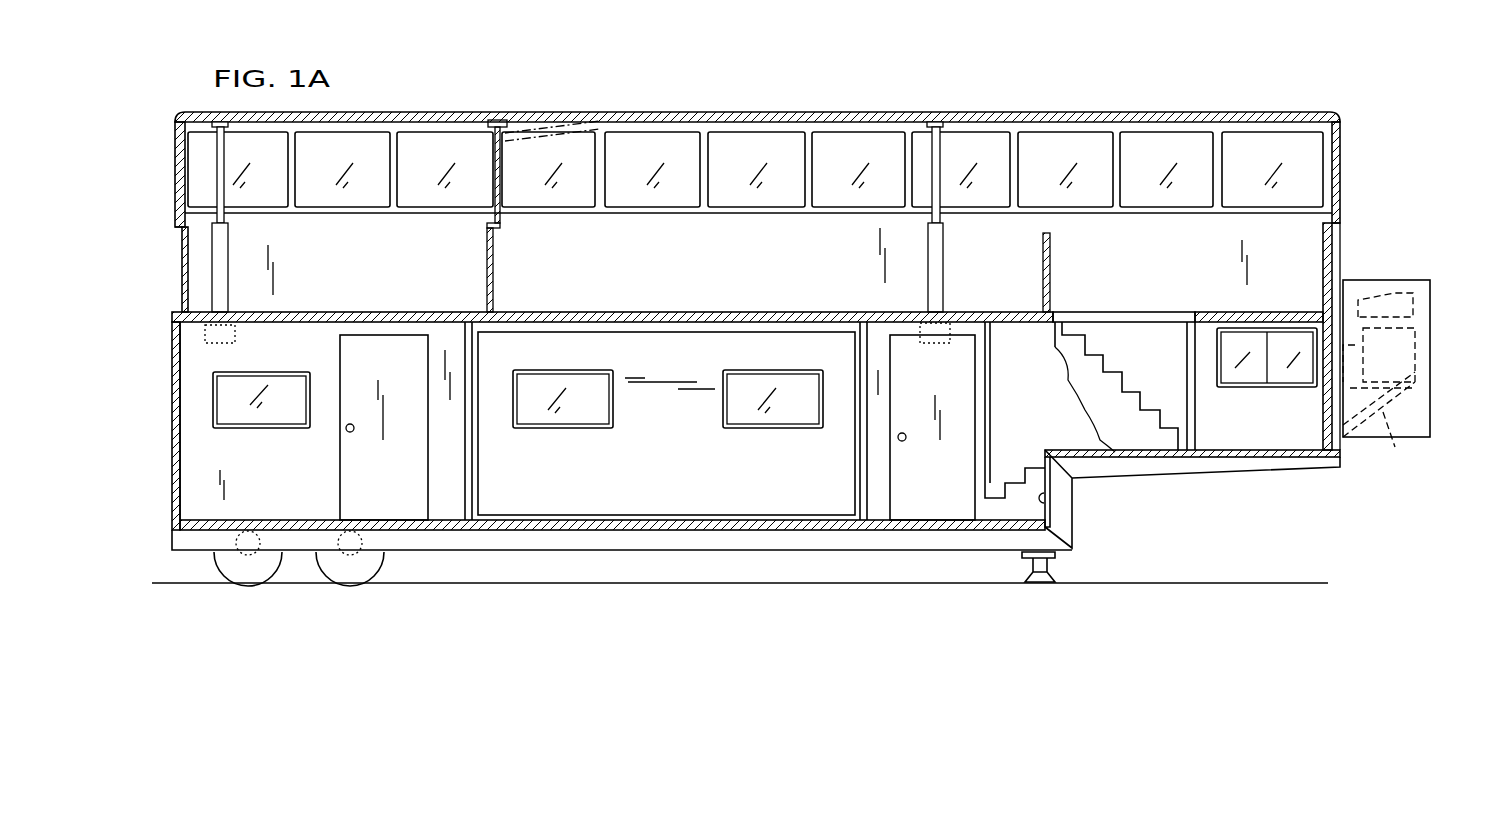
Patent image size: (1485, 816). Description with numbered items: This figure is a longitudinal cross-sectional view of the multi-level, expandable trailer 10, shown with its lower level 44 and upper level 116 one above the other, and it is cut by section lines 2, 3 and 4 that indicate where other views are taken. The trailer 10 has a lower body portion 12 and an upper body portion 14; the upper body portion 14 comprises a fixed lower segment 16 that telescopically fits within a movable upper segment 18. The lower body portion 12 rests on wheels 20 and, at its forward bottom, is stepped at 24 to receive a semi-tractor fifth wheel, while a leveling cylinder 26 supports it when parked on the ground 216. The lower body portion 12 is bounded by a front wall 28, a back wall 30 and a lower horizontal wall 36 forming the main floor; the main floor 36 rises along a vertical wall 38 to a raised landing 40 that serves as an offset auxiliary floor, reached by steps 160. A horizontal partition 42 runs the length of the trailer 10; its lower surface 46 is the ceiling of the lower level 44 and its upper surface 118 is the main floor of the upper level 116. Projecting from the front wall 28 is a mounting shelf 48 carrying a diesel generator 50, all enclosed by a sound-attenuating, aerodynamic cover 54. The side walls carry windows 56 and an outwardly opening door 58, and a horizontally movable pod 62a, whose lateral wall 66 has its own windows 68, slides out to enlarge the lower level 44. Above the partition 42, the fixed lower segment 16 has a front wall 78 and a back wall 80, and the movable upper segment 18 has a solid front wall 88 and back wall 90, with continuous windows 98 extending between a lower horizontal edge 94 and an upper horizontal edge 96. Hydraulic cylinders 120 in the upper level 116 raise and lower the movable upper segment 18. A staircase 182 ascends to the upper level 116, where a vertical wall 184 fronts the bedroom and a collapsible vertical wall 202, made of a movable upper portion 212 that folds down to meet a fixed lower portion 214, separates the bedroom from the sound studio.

The multi-level, expandable trailer 10 is at (965, 85).
The lower body portion 12 is at (1290, 500).
The upper body portion 14 is at (1353, 215).
The fixed lower segment 16 is at (1340, 273).
The movable upper segment 18 is at (1352, 138).
The wheels 20 is at (247, 575).
The stepped section 24 is at (1228, 473).
The leveling cylinder 26 is at (1040, 585).
The front wall 28 is at (1342, 450).
The back wall 30 is at (172, 447).
The lower horizontal wall 36 is at (805, 513).
The vertical wall 38 is at (1045, 500).
The raised landing 40 is at (1297, 447).
The horizontal partition 42 is at (635, 303).
The lower level 44 is at (1128, 335).
The lower surface 46 is at (665, 313).
The mounting shelf 48 is at (1385, 412).
The diesel generator 50 is at (1425, 294).
The sound-attenuating, aerodynamic cover 54 is at (1433, 352).
The windows 56 is at (240, 428).
The outwardly opening door 58 is at (397, 487).
The horizontally movable pod 62a is at (699, 528).
The lateral wall 66 is at (686, 449).
The windows 68 is at (555, 428).
The front wall 78 is at (1334, 238).
The back wall 80 is at (182, 302).
The front wall 88 is at (1341, 155).
The back wall 90 is at (176, 171).
The lower horizontal edge 94 is at (874, 214).
The upper horizontal edge 96 is at (777, 133).
The continuous windows 98 is at (1088, 145).
The upper level 116 is at (745, 253).
The upper surface 118 is at (728, 312).
The hydraulic cylinders 120 is at (246, 257).
The steps 160 is at (1020, 492).
The staircase 182 is at (1107, 372).
The vertical wall 184 is at (1051, 293).
The collapsible vertical wall 202 is at (505, 160).
The movable upper portion 212 is at (503, 197).
The fixed lower portion 214 is at (490, 290).
The ground 216 is at (1173, 580).
The section line 2- 2 is at (640, 75).
The section line 3- 3 is at (170, 543).
The section line 4- 4 is at (157, 237).